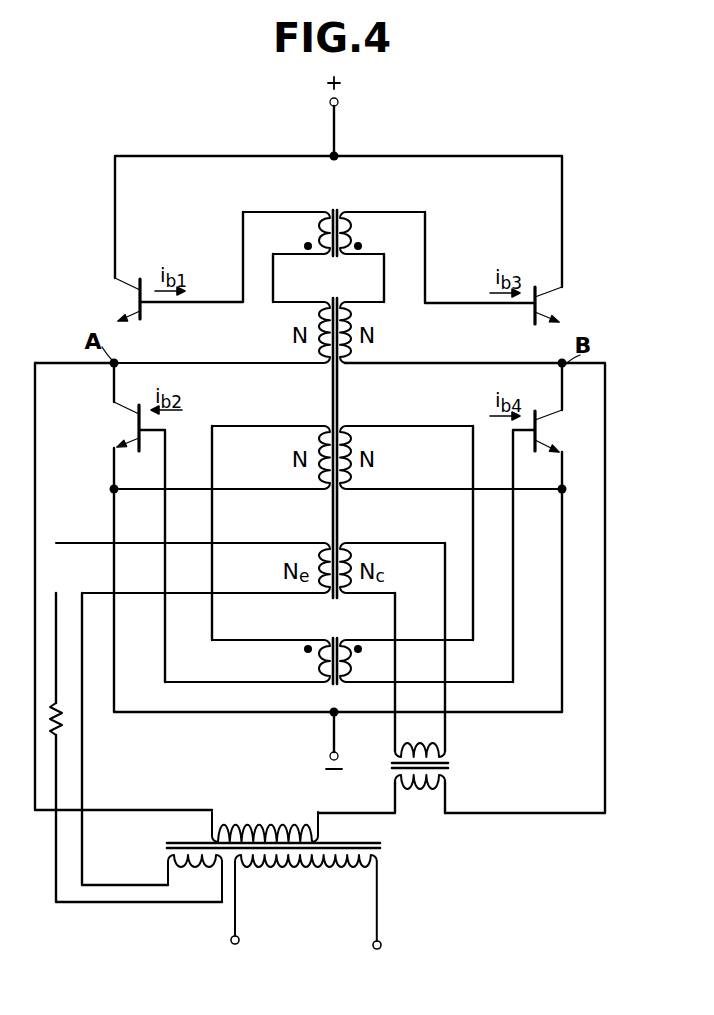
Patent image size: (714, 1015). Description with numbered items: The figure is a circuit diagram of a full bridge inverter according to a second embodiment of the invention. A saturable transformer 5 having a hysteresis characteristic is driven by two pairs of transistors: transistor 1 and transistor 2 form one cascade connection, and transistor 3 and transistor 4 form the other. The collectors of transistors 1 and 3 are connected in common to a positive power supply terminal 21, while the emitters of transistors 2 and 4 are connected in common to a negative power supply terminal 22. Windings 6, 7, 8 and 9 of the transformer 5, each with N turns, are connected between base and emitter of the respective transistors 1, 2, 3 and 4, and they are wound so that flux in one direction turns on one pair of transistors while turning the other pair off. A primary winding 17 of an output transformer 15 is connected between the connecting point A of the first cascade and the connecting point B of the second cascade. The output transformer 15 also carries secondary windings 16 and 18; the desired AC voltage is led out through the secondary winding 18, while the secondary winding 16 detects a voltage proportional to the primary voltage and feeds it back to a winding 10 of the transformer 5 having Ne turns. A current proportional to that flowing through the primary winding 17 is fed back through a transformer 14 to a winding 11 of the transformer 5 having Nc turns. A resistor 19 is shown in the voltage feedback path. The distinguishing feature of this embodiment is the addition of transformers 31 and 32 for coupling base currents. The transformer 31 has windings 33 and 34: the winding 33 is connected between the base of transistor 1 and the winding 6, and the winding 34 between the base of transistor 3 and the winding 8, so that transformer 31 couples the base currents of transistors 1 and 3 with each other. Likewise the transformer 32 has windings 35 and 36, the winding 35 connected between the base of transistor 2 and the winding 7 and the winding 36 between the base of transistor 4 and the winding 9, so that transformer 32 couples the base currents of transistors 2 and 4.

The transistor 1 is at (136, 303).
The transistor 2 is at (136, 430).
The transistor 3 is at (540, 304).
The transistor 4 is at (540, 433).
The saturable transformer 5 is at (334, 295).
The winding 6 is at (318, 318).
The winding 7 is at (318, 442).
The winding 8 is at (348, 318).
The winding 9 is at (348, 442).
The winding 10 is at (318, 558).
The winding 11 is at (348, 558).
The transformer 14 is at (449, 766).
The output transformer 15 is at (383, 846).
The secondary winding 16 is at (192, 866).
The primary winding 17 is at (251, 822).
The secondary winding 18 is at (288, 867).
The resistor 19 is at (63, 723).
The positive power supply terminal 21 is at (338, 101).
The negative power supply terminal 22 is at (338, 753).
The transformer 31 is at (334, 209).
The transformer 32 is at (334, 637).
The winding 33 is at (320, 226).
The winding 34 is at (348, 226).
The winding 35 is at (318, 662).
The winding 36 is at (348, 662).